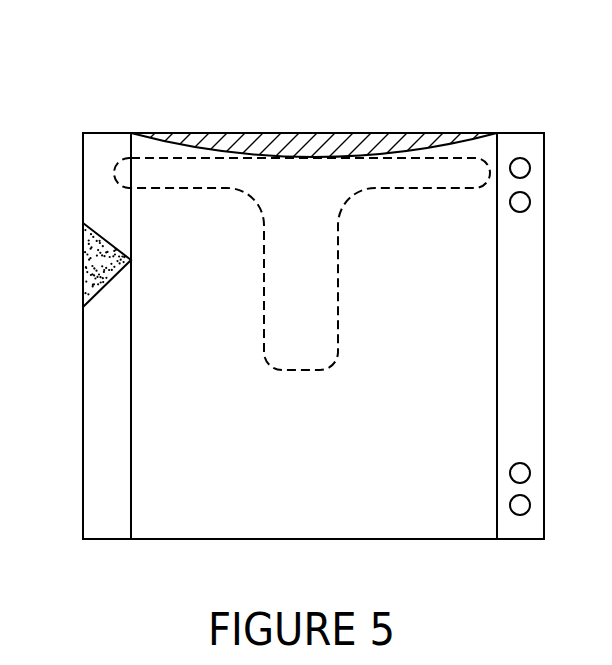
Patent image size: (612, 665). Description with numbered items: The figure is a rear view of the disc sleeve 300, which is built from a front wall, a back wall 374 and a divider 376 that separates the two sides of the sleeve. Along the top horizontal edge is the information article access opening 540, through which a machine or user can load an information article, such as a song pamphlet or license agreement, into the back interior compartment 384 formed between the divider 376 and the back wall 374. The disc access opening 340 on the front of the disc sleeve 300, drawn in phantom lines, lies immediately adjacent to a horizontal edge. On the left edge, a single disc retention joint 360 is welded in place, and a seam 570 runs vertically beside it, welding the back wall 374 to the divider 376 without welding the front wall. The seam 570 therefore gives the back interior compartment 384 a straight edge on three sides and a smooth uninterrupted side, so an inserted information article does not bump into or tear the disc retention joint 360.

The disc sleeve 300 is at (176, 93).
The disc access opening 340 is at (438, 178).
The disc retention joint 360 is at (90, 265).
The back wall 374 is at (420, 528).
The divider 376 is at (345, 140).
The back interior compartment 384 is at (270, 133).
The information article access opening 540 is at (428, 133).
The seam 570 is at (131, 480).